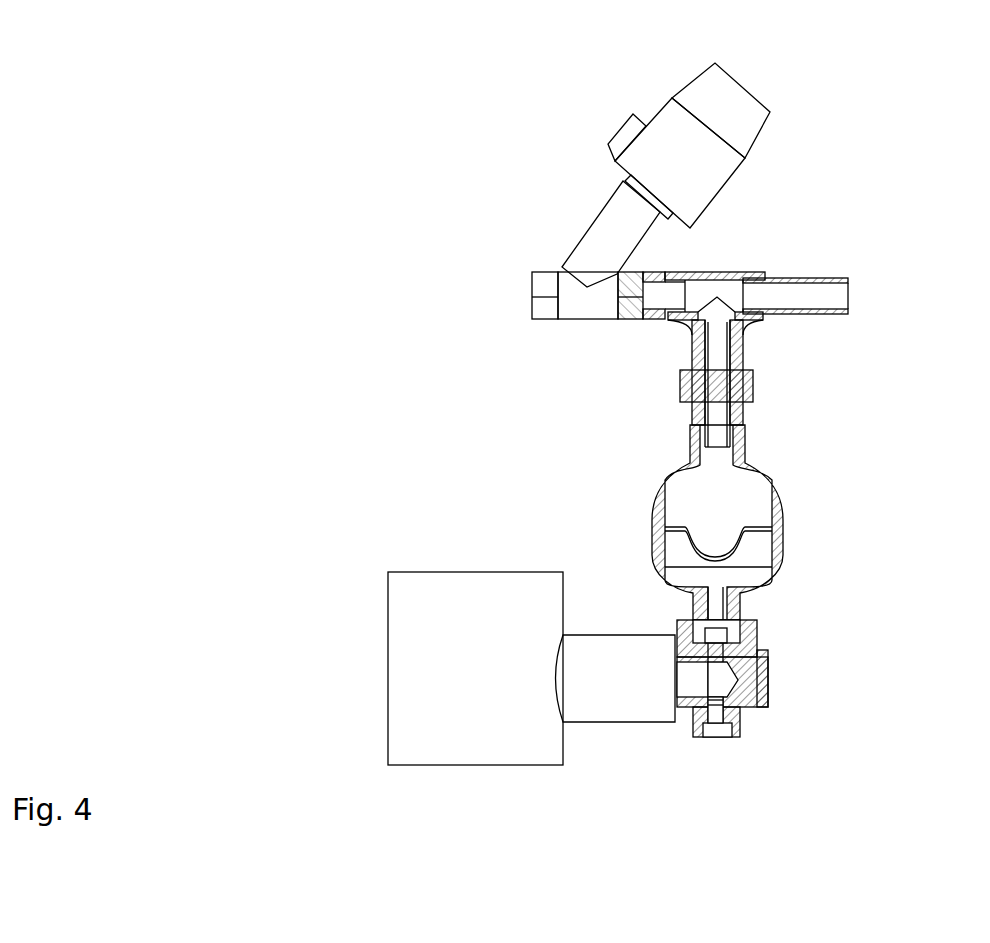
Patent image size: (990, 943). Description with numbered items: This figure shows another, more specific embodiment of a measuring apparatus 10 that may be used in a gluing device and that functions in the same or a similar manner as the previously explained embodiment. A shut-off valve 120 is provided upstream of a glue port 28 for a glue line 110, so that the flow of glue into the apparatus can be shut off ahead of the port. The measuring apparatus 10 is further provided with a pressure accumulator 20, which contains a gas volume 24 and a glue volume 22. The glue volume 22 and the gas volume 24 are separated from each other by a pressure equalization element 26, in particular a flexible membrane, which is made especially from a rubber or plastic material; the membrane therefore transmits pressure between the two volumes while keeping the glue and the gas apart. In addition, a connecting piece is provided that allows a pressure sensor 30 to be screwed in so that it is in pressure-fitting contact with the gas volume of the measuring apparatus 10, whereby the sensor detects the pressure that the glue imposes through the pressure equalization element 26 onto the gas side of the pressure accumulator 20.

The measuring apparatus 10 is at (872, 402).
The pressure accumulator 20 is at (777, 518).
The glue volume 22 is at (766, 564).
The gas volume 24 is at (733, 512).
The pressure equalization element 26 is at (678, 528).
The glue port 28 is at (728, 355).
The pressure sensor 30 is at (479, 680).
The glue line 110 is at (793, 293).
The shut-off valve 120 is at (578, 193).